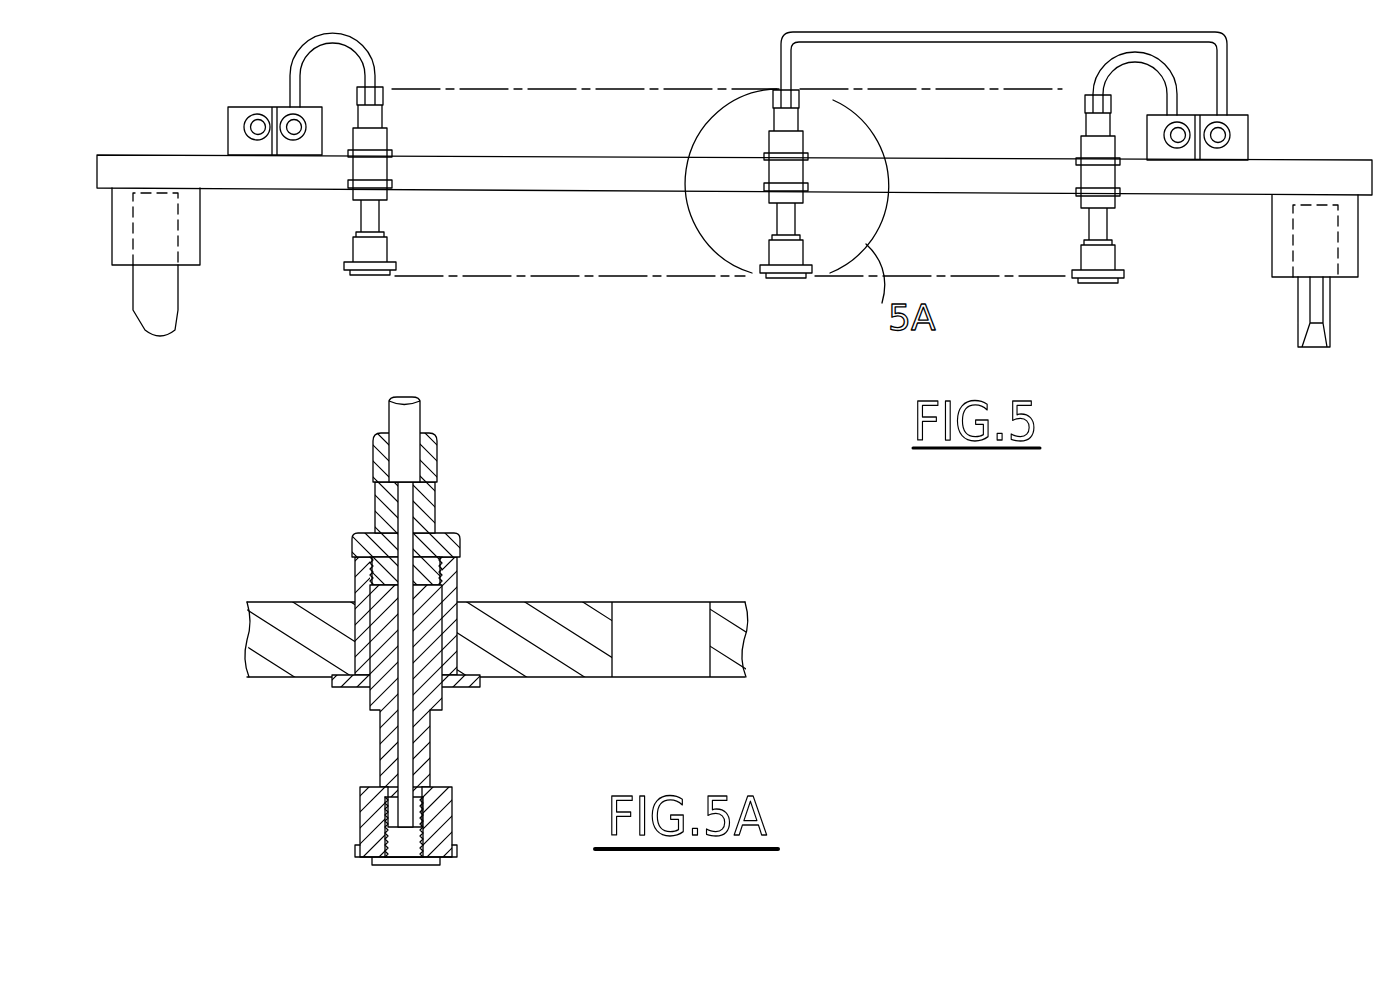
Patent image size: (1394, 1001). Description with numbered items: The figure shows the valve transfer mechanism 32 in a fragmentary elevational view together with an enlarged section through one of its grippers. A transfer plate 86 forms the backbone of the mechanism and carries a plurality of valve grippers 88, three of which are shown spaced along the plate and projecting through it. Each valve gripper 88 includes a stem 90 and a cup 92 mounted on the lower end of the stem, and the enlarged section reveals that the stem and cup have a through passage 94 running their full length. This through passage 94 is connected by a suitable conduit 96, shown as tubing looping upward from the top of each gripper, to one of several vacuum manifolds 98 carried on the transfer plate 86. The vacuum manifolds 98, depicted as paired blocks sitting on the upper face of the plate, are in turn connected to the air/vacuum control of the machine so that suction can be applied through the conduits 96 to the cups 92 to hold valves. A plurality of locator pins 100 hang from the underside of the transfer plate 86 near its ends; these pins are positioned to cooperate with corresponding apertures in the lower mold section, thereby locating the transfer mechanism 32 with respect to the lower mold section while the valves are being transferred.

In FIG. 5, the transfer mechanism 32 is at (266, 40).
In FIG. 5A, the transfer mechanism 32 is at (636, 483).
In FIG. 5, the transfer plate 86 is at (593, 180).
In FIG. 5A, the transfer plate 86 is at (572, 613).
In FIG. 5, the valve gripper 88 is at (421, 124).
In FIG. 5A, the valve gripper 88 is at (455, 508).
In FIG. 5A, the stem 90 is at (383, 510).
In FIG. 5A, the cup 92 is at (443, 813).
In FIG. 5A, the through passage 94 is at (404, 701).
In FIG. 5, the conduit 96 is at (358, 48).
In FIG. 5A, the conduit 96 is at (413, 422).
In FIG. 5, the vacuum manifold 98 is at (242, 90).
In FIG. 5, the locator pin 100 is at (178, 310).